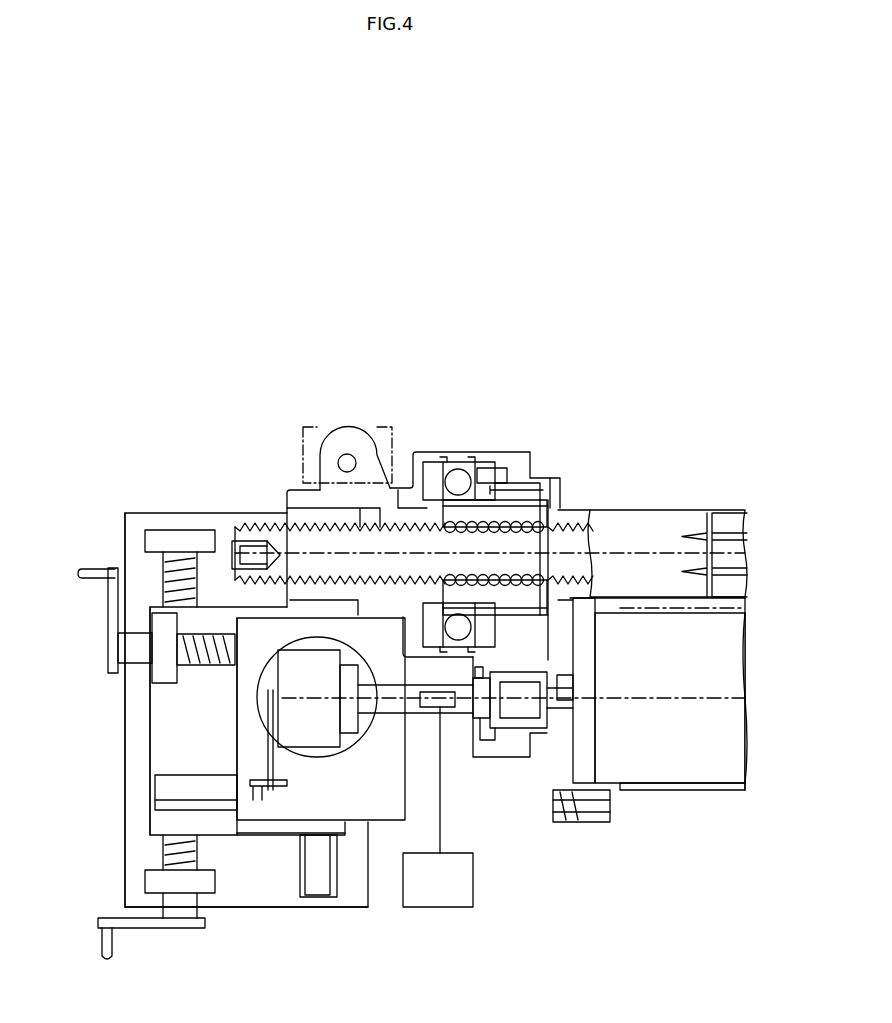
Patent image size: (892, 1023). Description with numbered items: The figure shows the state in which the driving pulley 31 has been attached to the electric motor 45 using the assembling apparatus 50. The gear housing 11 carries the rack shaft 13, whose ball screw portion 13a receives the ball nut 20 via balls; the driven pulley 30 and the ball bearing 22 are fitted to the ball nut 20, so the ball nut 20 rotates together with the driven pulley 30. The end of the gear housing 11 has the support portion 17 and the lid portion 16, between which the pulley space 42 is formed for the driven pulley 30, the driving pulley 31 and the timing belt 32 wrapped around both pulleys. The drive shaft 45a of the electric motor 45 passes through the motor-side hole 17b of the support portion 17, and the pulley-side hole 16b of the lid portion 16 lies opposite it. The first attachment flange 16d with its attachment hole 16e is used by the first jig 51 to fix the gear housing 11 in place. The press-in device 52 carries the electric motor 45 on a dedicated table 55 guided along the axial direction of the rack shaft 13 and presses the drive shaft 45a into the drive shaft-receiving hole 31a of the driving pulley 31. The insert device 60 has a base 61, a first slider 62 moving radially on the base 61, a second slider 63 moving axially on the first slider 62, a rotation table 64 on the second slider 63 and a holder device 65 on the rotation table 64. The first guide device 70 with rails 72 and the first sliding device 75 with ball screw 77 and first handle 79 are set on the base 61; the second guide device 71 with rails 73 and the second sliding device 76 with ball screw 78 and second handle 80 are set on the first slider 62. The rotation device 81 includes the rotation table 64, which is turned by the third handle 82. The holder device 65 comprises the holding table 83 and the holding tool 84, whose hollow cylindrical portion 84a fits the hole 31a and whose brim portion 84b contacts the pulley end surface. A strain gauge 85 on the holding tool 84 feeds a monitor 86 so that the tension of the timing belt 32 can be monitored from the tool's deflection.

The gear housing 11 is at (659, 497).
The rack shaft 13 is at (583, 518).
The ball screw portion 13a is at (253, 527).
The lid portion 16 is at (277, 492).
The pulley-side hole 16b is at (477, 680).
The first attachment flange 16d is at (368, 458).
The attachment hole 16e is at (338, 468).
The support portion 17 is at (558, 478).
The motor-side hole 17b is at (565, 713).
The ball nut 20 is at (537, 480).
The ball bearing 22 is at (477, 460).
The driven pulley 30 is at (516, 498).
The driving pulley 31 is at (538, 717).
The drive shaft-receiving hole 31a is at (527, 694).
The timing belt 32 is at (535, 721).
The pulley space 42 is at (505, 467).
The electric motor 45 is at (657, 804).
The drive shaft 45a is at (560, 687).
The assembling apparatus 50 is at (169, 500).
The first jig 51 is at (395, 428).
The press-in device 52 is at (733, 806).
The dedicated table 55 is at (685, 792).
The insert device 60 is at (118, 500).
The base 61 is at (128, 760).
The first slider 62 is at (158, 722).
The second slider 63 is at (383, 817).
The rotation table 64 is at (325, 757).
The holder device 65 is at (323, 752).
The first guide device 70 is at (328, 915).
The second guide device 71 is at (138, 804).
The rails 72 is at (192, 792).
The rails 73 is at (330, 860).
The first sliding device 75 is at (150, 863).
The second sliding device 76 is at (133, 680).
The ball screw 77 is at (163, 574).
The ball screw 78 is at (208, 666).
The first handle 79 is at (108, 945).
The second handle 80 is at (92, 572).
The rotation device 81 is at (415, 705).
The third handle 82 is at (295, 748).
The holding table 83 is at (308, 742).
The holding tool 84 is at (413, 707).
The hollow cylindrical portion 84a is at (503, 727).
The brim portion 84b is at (493, 735).
The strain gauge 85 is at (438, 704).
The monitor 86 is at (440, 897).